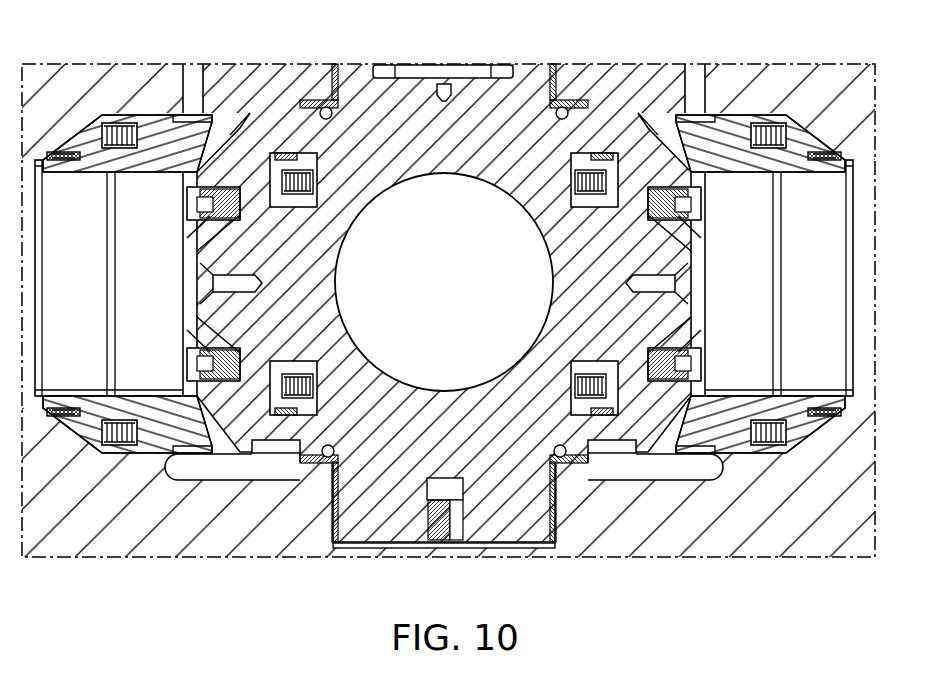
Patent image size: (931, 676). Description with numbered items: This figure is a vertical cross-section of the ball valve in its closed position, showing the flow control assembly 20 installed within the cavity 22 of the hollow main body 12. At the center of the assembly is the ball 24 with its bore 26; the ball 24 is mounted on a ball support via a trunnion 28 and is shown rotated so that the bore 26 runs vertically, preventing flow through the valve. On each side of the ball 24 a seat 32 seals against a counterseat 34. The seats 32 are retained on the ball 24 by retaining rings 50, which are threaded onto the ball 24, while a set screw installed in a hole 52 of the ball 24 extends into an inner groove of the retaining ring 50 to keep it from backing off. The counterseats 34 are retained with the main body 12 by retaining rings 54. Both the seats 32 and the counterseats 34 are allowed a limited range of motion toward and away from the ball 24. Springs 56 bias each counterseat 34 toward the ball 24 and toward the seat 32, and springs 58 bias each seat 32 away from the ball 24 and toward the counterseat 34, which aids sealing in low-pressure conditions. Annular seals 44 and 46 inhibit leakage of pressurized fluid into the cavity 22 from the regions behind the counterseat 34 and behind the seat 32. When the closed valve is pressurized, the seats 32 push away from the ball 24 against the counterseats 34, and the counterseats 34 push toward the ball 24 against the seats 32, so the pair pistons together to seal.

The main body 12 is at (66, 540).
The flow control assembly 20 is at (265, 455).
The cavity 22 is at (197, 462).
The ball 24 is at (530, 90).
The bore 26 is at (388, 378).
The trunnion 28 is at (500, 500).
The seat 32 is at (200, 386).
The counterseat 34 is at (97, 400).
The annular seal 44 is at (74, 162).
The annular seal 46 is at (278, 155).
The retaining ring 50 is at (200, 346).
The hole 52 is at (200, 322).
The retaining ring 54 is at (194, 123).
The springs 56 is at (108, 130).
The springs 58 is at (305, 178).